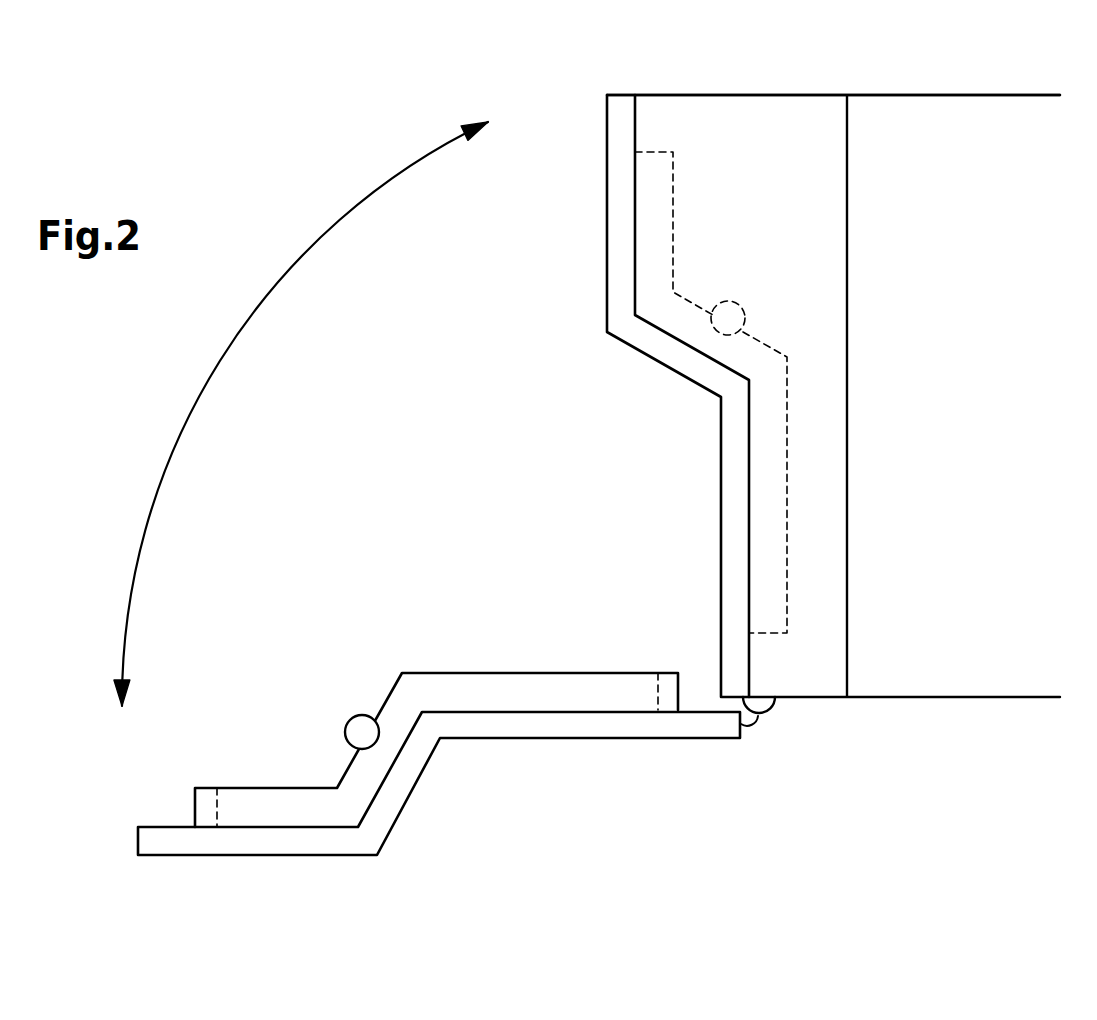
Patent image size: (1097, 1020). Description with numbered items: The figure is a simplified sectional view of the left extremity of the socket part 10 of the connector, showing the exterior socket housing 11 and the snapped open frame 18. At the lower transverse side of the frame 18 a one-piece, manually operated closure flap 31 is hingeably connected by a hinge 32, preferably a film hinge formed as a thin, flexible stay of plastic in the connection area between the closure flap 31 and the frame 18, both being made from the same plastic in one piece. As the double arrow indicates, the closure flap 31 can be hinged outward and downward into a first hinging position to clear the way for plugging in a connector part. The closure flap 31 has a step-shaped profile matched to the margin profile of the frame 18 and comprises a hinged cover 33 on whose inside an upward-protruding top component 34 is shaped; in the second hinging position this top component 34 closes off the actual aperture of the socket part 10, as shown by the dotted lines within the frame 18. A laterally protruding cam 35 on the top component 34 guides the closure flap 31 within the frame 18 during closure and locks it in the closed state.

The socket part 10 is at (833, 444).
The exterior socket housing 11 is at (962, 93).
The frame 18 is at (753, 133).
The closure flap 31 is at (439, 774).
The hinge 32 is at (794, 741).
The hinged cover 33 is at (285, 840).
The top component 34 is at (262, 800).
The cam 35 is at (359, 733).